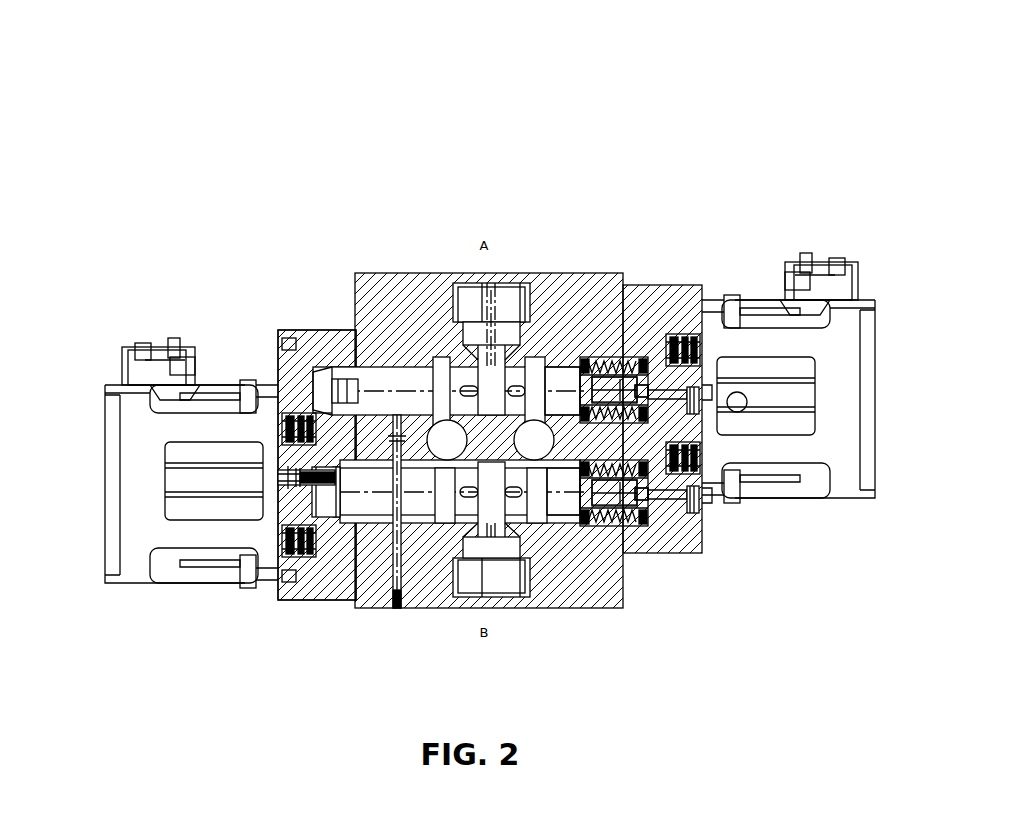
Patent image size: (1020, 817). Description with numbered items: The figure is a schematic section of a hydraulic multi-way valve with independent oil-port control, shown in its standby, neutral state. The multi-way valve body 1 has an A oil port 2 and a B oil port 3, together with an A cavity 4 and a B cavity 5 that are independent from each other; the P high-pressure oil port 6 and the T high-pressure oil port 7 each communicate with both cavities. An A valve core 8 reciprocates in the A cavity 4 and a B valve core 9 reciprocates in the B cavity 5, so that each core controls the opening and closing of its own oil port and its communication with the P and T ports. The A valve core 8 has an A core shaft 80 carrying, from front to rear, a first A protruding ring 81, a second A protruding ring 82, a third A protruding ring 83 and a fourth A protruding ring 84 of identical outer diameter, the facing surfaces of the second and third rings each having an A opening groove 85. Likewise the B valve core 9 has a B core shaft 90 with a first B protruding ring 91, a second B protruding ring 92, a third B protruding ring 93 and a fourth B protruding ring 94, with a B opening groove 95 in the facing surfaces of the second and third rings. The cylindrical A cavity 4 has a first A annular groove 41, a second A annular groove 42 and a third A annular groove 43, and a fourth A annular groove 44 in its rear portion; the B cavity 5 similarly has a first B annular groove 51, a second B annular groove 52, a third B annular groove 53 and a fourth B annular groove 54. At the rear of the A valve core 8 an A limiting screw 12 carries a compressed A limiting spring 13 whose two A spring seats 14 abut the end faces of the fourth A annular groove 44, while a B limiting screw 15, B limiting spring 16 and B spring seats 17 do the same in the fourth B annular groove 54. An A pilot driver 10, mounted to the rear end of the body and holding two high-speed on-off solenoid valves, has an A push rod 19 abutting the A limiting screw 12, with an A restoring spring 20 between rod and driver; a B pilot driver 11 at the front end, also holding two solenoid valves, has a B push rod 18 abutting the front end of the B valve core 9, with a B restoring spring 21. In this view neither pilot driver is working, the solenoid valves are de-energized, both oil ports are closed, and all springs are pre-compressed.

The multi-way valve body 1 is at (292, 332).
The A oil port 2 is at (515, 300).
The B oil port 3 is at (500, 540).
The A cavity 4 is at (336, 332).
The B cavity 5 is at (346, 513).
The P high-pressure oil port 6 is at (398, 605).
The T high-pressure oil port 7 is at (540, 450).
The A valve core 8 is at (350, 385).
The B valve core 9 is at (290, 567).
The A pilot driver 10 is at (843, 368).
The B pilot driver 11 is at (187, 537).
The A limiting screw 12 is at (665, 373).
The A limiting spring 13 is at (652, 380).
The A spring seat 14 is at (692, 370).
The B limiting screw 15 is at (632, 525).
The B limiting spring 16 is at (622, 525).
The B spring seat 17 is at (634, 515).
The B push rod 18 is at (290, 476).
The A push rod 19 is at (717, 347).
The A restoring spring 20 is at (702, 418).
The B restoring spring 21 is at (285, 478).
The first A annular groove 41 is at (440, 360).
The second A annular groove 42 is at (482, 362).
The third A annular groove 43 is at (560, 372).
The fourth A annular groove 44 is at (625, 378).
The first B annular groove 51 is at (425, 515).
The second B annular groove 52 is at (470, 510).
The third B annular groove 53 is at (543, 520).
The fourth B annular groove 54 is at (624, 525).
The A core shaft 80 is at (345, 380).
The first A protruding ring 81 is at (368, 372).
The second A protruding ring 82 is at (458, 366).
The third A protruding ring 83 is at (522, 368).
The fourth A protruding ring 84 is at (583, 378).
The A opening groove 85 is at (504, 310).
The B core shaft 90 is at (336, 515).
The first B protruding ring 91 is at (375, 507).
The second B protruding ring 92 is at (442, 448).
The third B protruding ring 93 is at (522, 520).
The fourth B protruding ring 94 is at (612, 525).
The B opening groove 95 is at (498, 495).